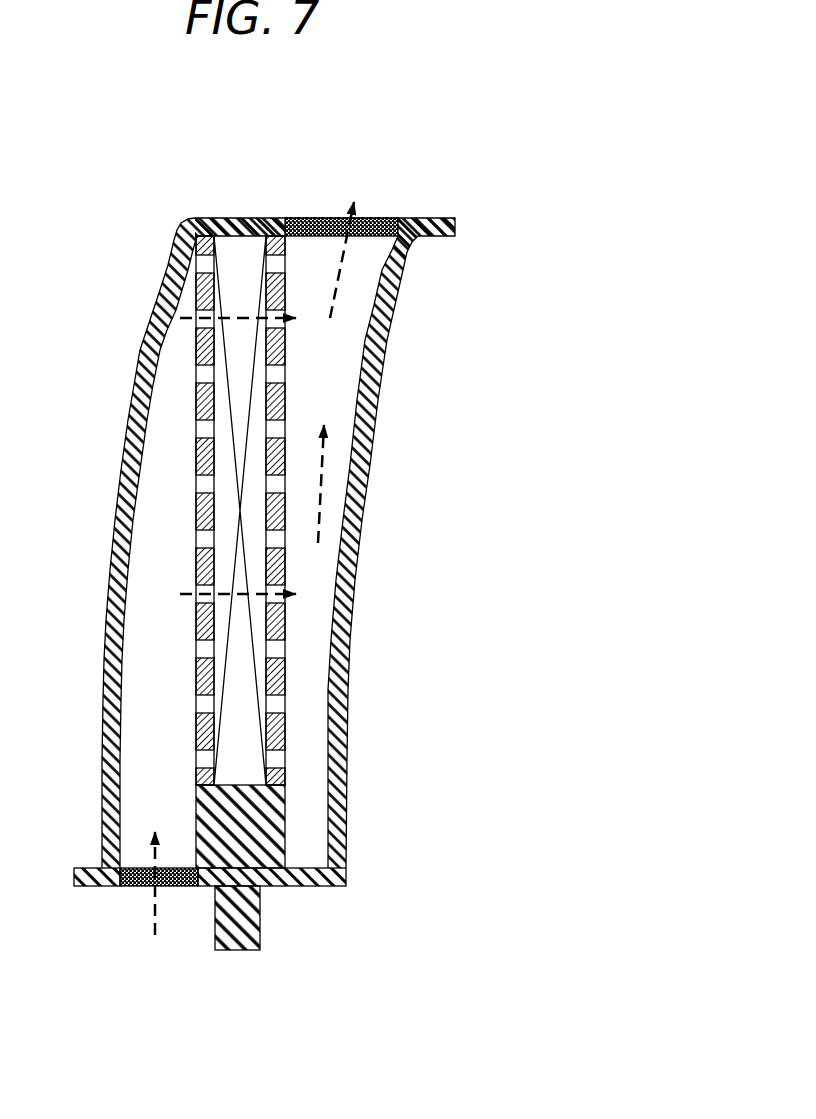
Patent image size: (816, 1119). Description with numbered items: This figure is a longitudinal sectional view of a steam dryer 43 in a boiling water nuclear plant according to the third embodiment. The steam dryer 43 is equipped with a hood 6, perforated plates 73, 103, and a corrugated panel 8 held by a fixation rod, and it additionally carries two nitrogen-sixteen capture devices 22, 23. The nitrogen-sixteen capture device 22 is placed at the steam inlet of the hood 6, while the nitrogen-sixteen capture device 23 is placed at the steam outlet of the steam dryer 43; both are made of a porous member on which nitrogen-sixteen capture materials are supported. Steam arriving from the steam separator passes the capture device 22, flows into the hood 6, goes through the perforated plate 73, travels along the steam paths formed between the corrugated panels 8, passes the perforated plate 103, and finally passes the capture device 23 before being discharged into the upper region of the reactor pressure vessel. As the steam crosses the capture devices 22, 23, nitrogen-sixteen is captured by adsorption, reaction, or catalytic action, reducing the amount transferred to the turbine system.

The steam dryer 43 is at (383, 136).
The hood 6 is at (125, 512).
The N-16 capture device 23 is at (385, 220).
The perforated plate 103 is at (287, 262).
The corrugated panel 8 is at (233, 257).
The perforated plate 73 is at (198, 297).
The N-16 capture device 22 is at (131, 886).